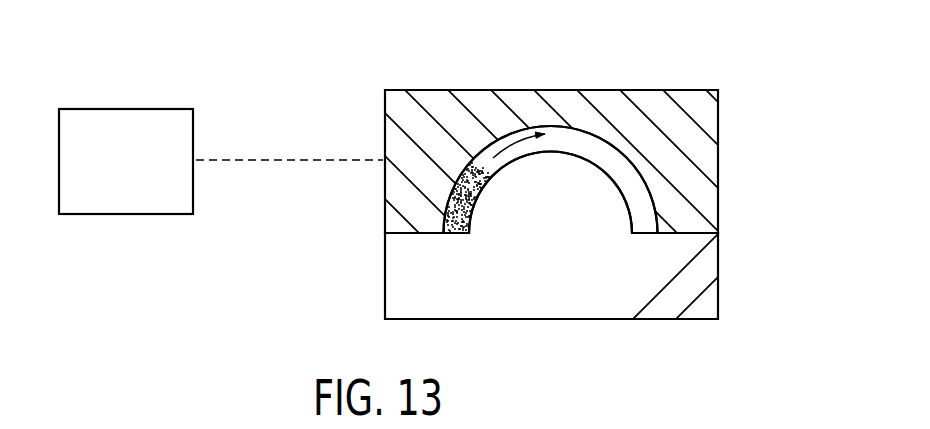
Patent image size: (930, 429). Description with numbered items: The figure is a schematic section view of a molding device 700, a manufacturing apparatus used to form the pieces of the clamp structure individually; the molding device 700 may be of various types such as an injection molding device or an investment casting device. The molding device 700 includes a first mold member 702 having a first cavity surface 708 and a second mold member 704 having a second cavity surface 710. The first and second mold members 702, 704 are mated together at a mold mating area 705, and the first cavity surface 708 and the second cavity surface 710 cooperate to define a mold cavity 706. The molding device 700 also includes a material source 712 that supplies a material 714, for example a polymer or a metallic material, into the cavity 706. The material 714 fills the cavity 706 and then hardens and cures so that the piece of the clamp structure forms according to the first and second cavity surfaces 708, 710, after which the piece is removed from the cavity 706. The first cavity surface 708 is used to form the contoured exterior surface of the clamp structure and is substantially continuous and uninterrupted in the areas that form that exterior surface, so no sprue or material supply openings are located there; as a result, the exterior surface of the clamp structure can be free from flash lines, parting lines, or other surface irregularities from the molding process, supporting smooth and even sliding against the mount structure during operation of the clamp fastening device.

The molding device 700 is at (380, 70).
The first mold member 702 is at (697, 190).
The second mold member 704 is at (660, 295).
The mold mating area 705 is at (730, 236).
The mold cavity 706 is at (630, 188).
The first cavity surface 708 is at (580, 125).
The second cavity surface 710 is at (590, 160).
The material source 712 is at (128, 214).
The material 714 is at (462, 218).